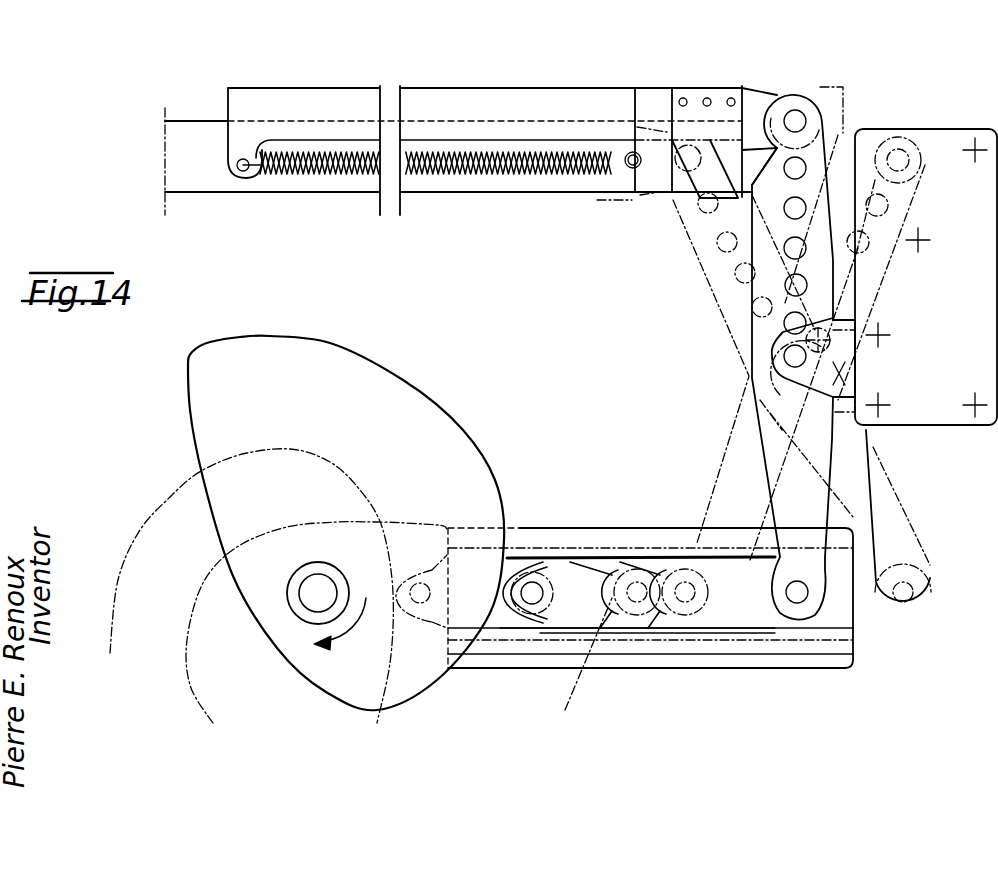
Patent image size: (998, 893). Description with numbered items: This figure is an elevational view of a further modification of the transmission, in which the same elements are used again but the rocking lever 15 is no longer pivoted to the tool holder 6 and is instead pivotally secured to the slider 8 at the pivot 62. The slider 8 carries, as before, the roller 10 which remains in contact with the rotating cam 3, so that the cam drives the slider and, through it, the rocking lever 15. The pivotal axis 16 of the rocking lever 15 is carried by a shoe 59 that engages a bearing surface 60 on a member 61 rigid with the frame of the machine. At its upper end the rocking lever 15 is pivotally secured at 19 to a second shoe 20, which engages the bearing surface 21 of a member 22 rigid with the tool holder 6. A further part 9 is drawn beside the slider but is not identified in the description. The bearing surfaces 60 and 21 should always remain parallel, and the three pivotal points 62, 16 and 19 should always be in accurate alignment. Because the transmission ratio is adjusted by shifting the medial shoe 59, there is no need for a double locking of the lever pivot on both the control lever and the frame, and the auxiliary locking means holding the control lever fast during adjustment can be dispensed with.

The cam 3 is at (405, 390).
The tool holder 6 is at (471, 150).
The slider 8 is at (728, 610).
The slide housing 9 is at (587, 537).
The roller 10 is at (518, 618).
The rocking lever 15 is at (803, 489).
The pivotal axis 16 is at (788, 355).
The pivot 19 is at (802, 121).
The second shoe 20 is at (757, 107).
The bearing surface 21 is at (737, 109).
The member 22 is at (683, 192).
The shoe 59 is at (847, 374).
The bearing surface 60 is at (858, 330).
The member 61 is at (953, 413).
The pivot 62 is at (797, 598).